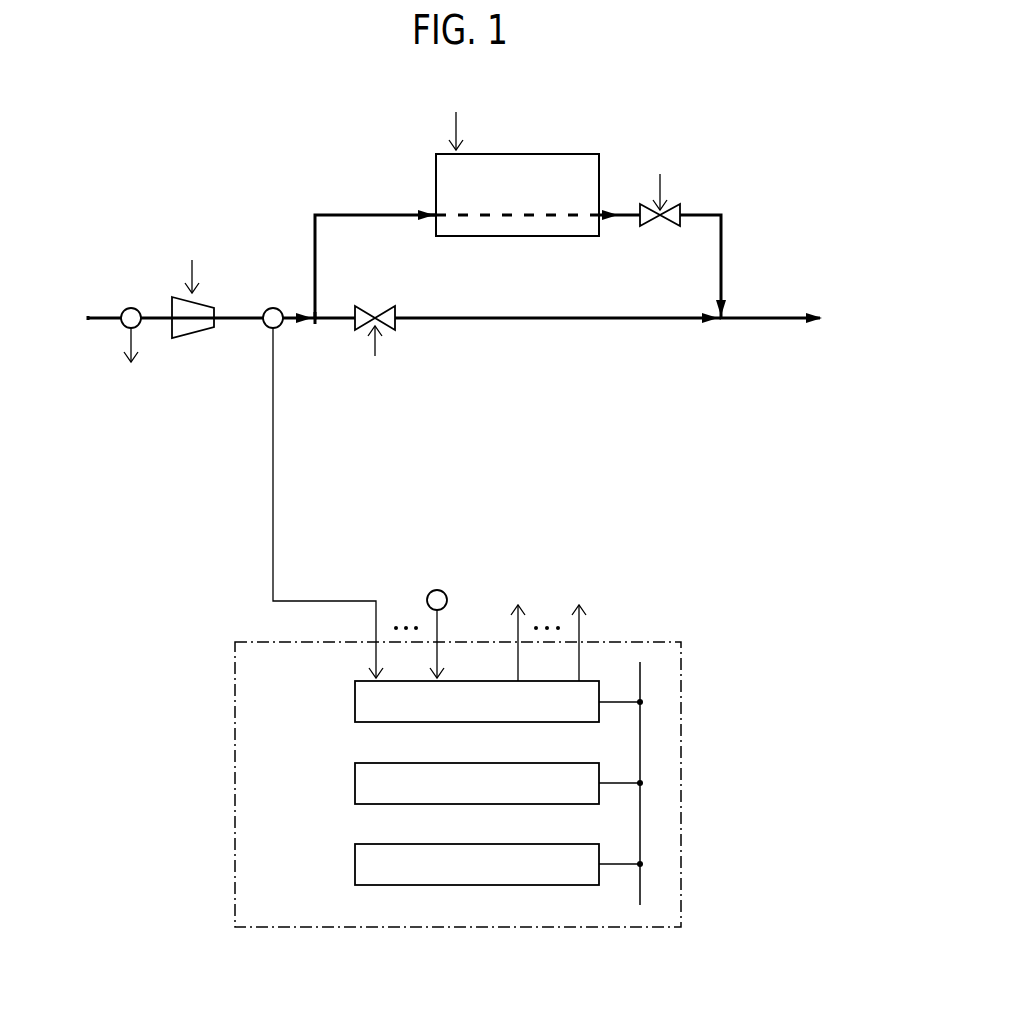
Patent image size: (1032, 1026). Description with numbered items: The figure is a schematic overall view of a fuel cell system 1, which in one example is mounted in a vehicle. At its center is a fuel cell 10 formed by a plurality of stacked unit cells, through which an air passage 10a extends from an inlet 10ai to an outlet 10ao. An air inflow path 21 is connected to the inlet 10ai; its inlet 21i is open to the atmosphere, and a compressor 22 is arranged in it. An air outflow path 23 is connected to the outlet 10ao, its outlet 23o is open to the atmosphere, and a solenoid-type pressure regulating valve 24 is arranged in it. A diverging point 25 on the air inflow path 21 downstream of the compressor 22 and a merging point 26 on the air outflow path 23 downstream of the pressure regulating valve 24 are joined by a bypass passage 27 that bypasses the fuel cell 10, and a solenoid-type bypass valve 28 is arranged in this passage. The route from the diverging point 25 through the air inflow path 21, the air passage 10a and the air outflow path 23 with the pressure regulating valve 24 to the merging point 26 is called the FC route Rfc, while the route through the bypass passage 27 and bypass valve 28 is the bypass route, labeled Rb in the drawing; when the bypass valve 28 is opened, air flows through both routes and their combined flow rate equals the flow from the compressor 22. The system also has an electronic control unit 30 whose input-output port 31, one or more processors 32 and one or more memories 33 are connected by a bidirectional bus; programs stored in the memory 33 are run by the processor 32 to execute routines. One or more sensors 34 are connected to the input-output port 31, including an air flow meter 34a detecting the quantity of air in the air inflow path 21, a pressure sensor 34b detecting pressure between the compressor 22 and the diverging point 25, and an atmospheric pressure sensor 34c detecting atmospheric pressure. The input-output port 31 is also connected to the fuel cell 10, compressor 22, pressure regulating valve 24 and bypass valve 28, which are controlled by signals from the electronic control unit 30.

The fuel cell system 1 is at (845, 122).
The fuel cell 10 is at (580, 154).
The air passage 10a is at (503, 215).
The inlet 10ai is at (440, 217).
The outlet 10ao is at (595, 217).
The air inflow path 21 is at (314, 277).
The inlet of the air inflow path 21i is at (88, 318).
The compressor 22 is at (171, 297).
The air outflow path 23 is at (782, 316).
The outlet of the air outflow path 23o is at (822, 320).
The pressure regulating valve 24 is at (680, 208).
The diverging point 25 is at (316, 321).
The merging point 26 is at (724, 321).
The bypass passage 27 is at (622, 321).
The bypass valve 28 is at (396, 324).
The electronic control unit 30 is at (658, 640).
The input-output port 31 is at (355, 700).
The processor 32 is at (355, 782).
The memory 33 is at (355, 863).
The sensors 34 is at (394, 582).
The air flow meter 34a is at (131, 308).
The pressure sensor 34b is at (271, 330).
The atmospheric pressure sensor 34c is at (439, 590).
The bypass flow path Rb is at (514, 335).
The FC route Rfc is at (396, 196).